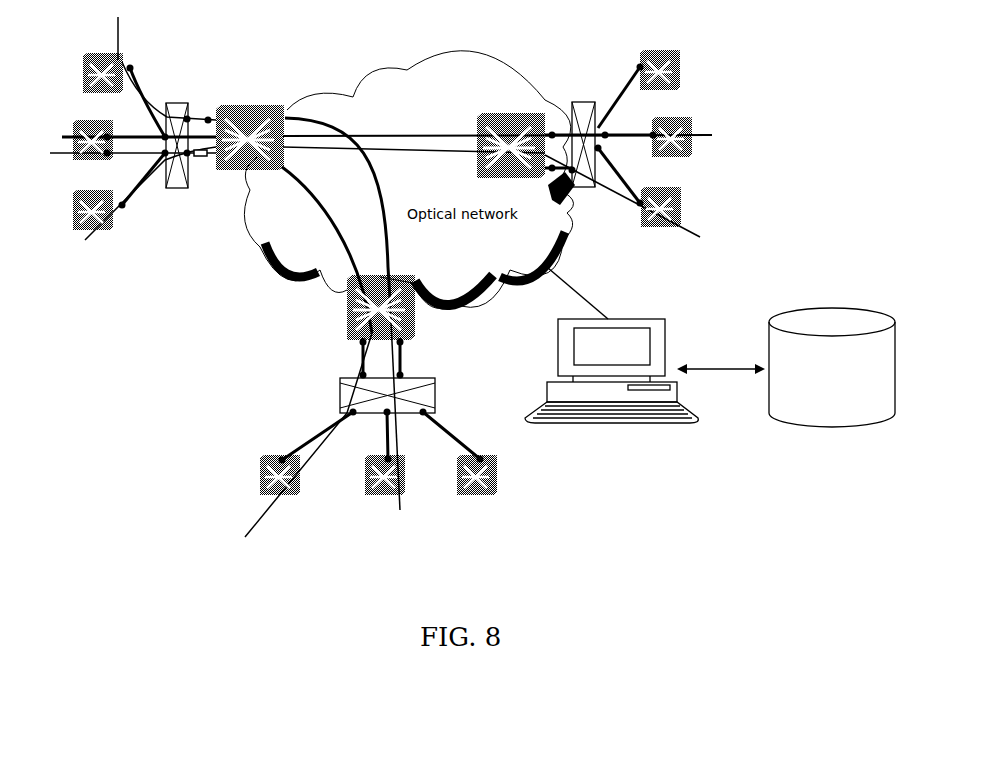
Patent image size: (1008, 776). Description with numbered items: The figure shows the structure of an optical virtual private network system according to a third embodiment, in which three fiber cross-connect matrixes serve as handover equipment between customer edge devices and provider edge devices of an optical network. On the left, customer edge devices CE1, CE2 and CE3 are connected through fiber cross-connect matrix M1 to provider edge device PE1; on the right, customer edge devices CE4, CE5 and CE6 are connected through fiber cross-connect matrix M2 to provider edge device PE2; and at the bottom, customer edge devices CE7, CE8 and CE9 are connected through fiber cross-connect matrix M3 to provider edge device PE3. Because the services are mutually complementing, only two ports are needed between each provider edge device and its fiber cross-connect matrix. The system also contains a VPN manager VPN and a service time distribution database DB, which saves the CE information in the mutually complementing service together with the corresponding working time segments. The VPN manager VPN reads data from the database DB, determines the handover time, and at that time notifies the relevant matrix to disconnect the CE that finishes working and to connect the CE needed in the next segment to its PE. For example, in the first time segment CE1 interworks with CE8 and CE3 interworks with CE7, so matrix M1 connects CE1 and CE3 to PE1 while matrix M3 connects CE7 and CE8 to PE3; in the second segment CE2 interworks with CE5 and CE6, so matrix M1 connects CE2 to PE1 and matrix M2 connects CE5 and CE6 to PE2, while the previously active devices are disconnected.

The customer edge device CE1 is at (105, 65).
The customer edge device CE2 is at (66, 140).
The customer edge device CE3 is at (96, 232).
The customer edge device CE4 is at (662, 62).
The customer edge device CE5 is at (703, 137).
The customer edge device CE6 is at (663, 221).
The customer edge device CE7 is at (258, 476).
The customer edge device CE8 is at (388, 500).
The customer edge device CE9 is at (502, 475).
The provider edge device PE1 is at (250, 125).
The provider edge device PE2 is at (511, 131).
The provider edge device PE3 is at (384, 299).
The fiber cross-connect matrix 1 M1 is at (182, 174).
The fiber cross-connect matrix 2 M2 is at (570, 103).
The fiber cross-connect matrix 3 M3 is at (316, 392).
The VPN manager VPN is at (590, 345).
The service time distribution database DB is at (832, 367).